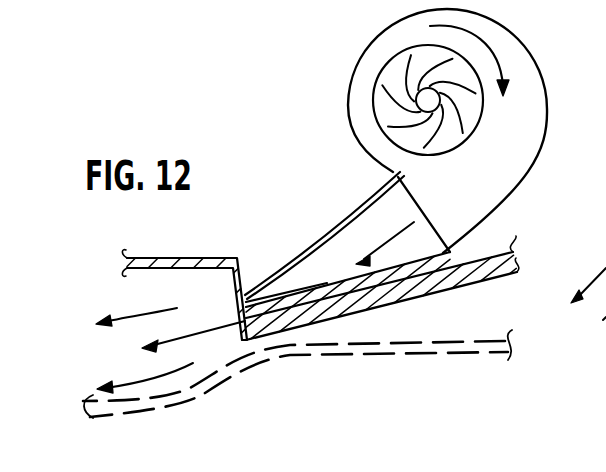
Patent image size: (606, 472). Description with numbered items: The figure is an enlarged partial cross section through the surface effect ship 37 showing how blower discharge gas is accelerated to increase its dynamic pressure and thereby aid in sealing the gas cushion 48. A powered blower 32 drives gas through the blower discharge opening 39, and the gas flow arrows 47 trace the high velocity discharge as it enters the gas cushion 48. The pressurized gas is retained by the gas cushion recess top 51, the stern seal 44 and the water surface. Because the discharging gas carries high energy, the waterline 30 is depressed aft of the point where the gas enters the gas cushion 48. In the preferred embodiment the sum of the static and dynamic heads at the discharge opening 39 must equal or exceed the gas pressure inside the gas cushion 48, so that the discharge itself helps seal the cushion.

The waterline 30 is at (193, 400).
The powered blower 32 is at (533, 79).
The surface effect ship 37 is at (479, 282).
The blower discharge opening 39 is at (237, 318).
The stern seal 44 is at (269, 5).
The gas flow arrows 47 is at (387, 238).
The gas cushion 48 is at (100, 357).
The gas cushion recess top 51 is at (173, 258).